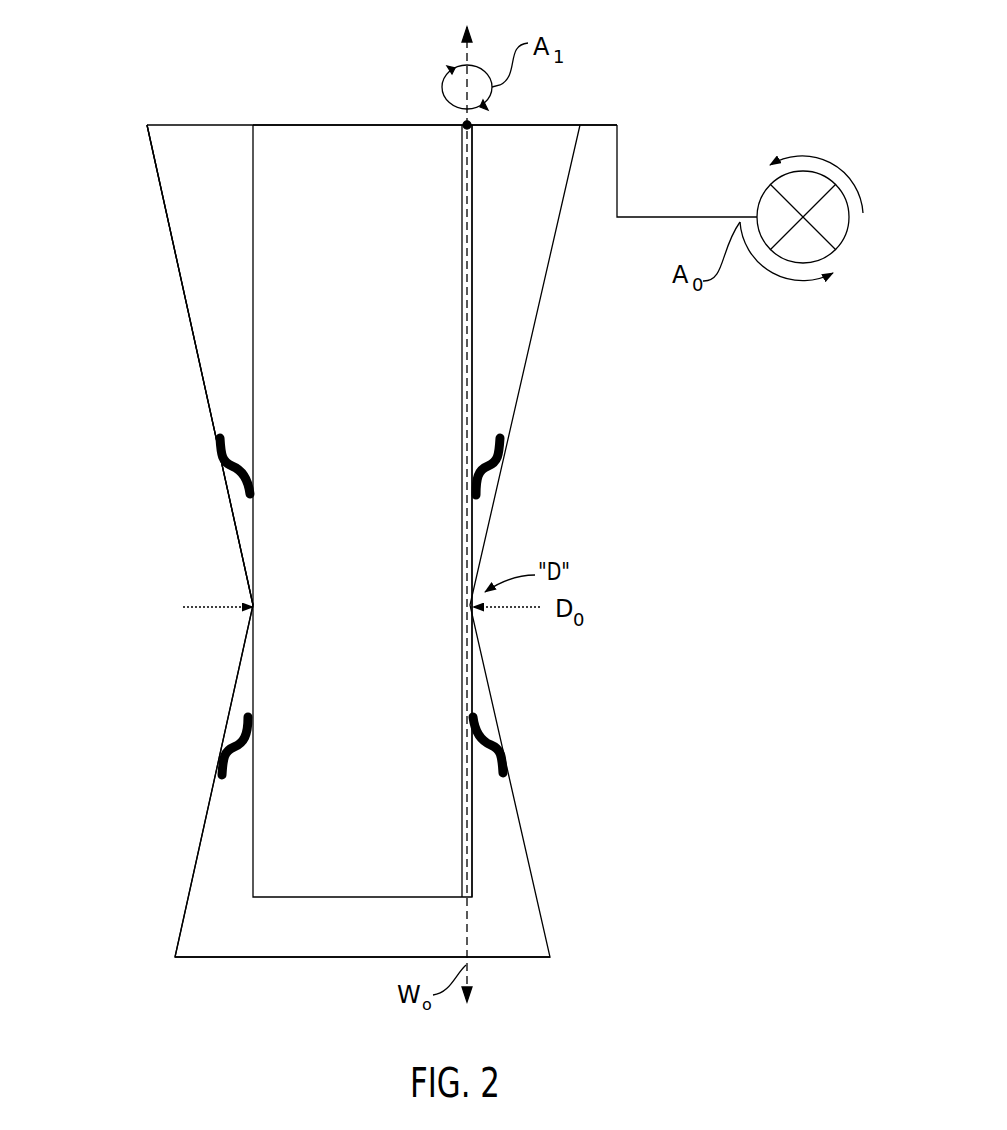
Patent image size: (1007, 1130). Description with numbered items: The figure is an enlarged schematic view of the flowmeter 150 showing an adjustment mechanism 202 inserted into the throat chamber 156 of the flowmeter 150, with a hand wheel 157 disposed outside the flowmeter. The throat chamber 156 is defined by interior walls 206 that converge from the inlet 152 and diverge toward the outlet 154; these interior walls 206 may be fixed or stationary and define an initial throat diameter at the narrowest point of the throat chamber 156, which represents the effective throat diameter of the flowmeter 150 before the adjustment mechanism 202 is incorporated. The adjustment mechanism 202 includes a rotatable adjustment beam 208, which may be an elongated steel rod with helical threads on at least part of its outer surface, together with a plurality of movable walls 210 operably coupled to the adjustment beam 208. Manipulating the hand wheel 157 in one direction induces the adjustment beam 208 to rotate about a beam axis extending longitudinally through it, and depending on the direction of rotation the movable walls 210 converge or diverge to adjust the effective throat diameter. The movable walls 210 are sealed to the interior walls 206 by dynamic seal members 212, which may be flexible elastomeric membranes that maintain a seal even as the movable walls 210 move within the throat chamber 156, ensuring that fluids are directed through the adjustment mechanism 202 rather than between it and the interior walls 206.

The flowmeter 150 is at (325, 504).
The inlet 152 is at (157, 978).
The outlet 154 is at (117, 100).
The throat chamber 156 is at (218, 535).
The hand wheel 157 is at (805, 172).
The adjustment mechanism 202 is at (287, 122).
The interior walls 206 is at (200, 365).
The adjustment beam 208 is at (470, 808).
The movable walls 210 is at (260, 662).
The dynamic seal members 212 is at (508, 447).